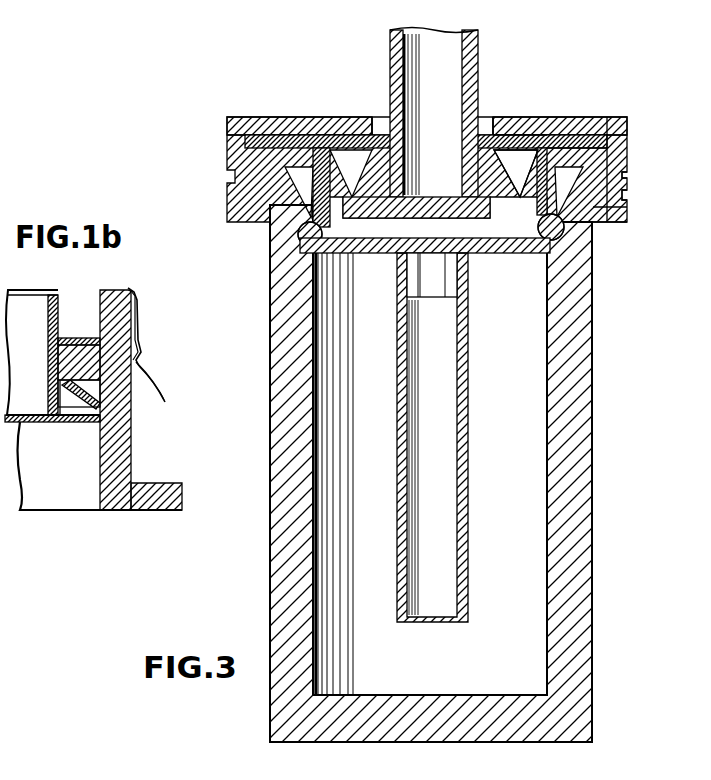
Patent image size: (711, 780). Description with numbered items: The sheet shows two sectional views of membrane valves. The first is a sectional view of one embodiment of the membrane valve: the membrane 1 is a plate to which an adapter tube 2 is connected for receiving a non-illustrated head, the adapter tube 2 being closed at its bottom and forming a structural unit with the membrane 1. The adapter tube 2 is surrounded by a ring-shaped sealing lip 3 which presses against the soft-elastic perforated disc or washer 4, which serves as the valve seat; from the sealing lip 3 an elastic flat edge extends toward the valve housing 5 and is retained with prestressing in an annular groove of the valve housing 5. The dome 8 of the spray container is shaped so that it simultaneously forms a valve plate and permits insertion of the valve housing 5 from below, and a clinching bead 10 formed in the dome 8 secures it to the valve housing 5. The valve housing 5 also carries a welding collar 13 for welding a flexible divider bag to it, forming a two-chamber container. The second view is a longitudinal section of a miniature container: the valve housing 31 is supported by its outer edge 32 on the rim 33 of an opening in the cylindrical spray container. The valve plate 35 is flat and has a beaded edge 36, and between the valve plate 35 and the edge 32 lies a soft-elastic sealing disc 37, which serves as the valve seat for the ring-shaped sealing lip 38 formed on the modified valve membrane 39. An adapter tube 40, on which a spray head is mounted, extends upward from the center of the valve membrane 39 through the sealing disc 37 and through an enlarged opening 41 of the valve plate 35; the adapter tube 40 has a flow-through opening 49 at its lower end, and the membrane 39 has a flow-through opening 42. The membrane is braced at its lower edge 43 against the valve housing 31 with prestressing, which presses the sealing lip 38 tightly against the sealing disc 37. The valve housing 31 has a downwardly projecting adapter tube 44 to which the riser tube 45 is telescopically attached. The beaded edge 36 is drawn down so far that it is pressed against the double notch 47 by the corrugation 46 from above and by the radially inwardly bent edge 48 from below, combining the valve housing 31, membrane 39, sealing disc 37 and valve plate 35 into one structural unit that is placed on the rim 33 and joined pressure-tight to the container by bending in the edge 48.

In FIG. 1B, the membrane 1 is at (62, 422).
In FIG. 1B, the adapter tube 2 is at (53, 298).
In FIG. 1B, the ring-shaped sealing lip 3 is at (88, 344).
In FIG. 1B, the soft-elastic perforated disc 4 is at (68, 340).
In FIG. 1B, the valve housing 5 is at (126, 446).
In FIG. 1B, the dome 8 is at (163, 398).
In FIG. 1B, the clinching bead 10 is at (141, 363).
In FIG. 1B, the welding collar 13 is at (150, 490).
In FIG. 3, the valve housing 31 is at (481, 255).
In FIG. 3, the outer edge 32 is at (603, 157).
In FIG. 3, the rim 33 is at (623, 196).
In FIG. 3, the valve plate 35 is at (517, 128).
In FIG. 3, the beaded edge 36 is at (603, 120).
In FIG. 3, the soft-elastic sealing disc 37 is at (565, 122).
In FIG. 3, the ring-shaped sealing lip 38 is at (348, 172).
In FIG. 3, the valve membrane 39 is at (310, 135).
In FIG. 3, the adapter tube 40 is at (395, 78).
In FIG. 3, the enlarged opening 41 is at (482, 127).
In FIG. 3, the flow-through opening 42 is at (518, 242).
In FIG. 3, the lower edge 43 is at (556, 243).
In FIG. 3, the adapter tube 44 is at (466, 320).
In FIG. 3, the riser tube 45 is at (463, 343).
In FIG. 3, the corrugation 46 is at (624, 176).
In FIG. 3, the double notch 47 is at (617, 208).
In FIG. 3, the radially inwardly bent edge 48 is at (620, 224).
In FIG. 3, the flow-through opening 49 is at (387, 177).